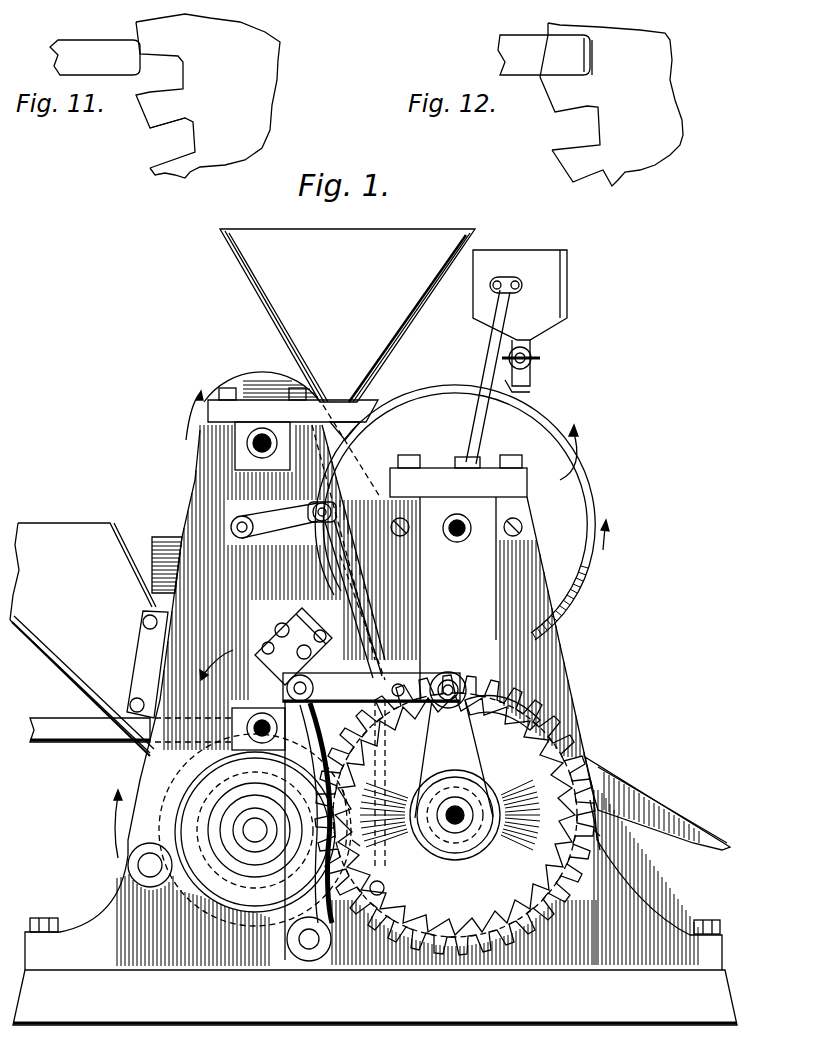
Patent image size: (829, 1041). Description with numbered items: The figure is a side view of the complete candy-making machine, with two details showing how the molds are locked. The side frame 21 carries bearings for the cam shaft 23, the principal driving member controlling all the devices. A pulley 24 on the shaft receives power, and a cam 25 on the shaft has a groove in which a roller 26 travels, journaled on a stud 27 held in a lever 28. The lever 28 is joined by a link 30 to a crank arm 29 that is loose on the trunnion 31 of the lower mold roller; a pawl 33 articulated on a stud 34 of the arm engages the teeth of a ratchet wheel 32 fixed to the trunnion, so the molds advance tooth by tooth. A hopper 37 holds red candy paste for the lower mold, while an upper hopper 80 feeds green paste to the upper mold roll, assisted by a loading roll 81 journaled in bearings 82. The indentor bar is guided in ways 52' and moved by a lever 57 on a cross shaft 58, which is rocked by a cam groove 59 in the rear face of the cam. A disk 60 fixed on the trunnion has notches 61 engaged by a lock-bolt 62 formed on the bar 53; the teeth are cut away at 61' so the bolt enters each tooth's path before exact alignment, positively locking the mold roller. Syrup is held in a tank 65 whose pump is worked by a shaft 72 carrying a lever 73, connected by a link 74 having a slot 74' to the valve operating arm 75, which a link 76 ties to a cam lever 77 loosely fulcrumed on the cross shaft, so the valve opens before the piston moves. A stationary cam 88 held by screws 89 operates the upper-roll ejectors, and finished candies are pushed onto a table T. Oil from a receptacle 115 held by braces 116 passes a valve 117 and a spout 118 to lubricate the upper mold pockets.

In FIG. 1, the side frame 21 is at (612, 913).
In FIG. 1, the cam shaft 23 is at (243, 830).
In FIG. 1, the pulley 24 is at (133, 783).
In FIG. 1, the cam 25 is at (263, 908).
In FIG. 1, the roller 26 is at (345, 786).
In FIG. 1, the stud 27 is at (345, 834).
In FIG. 1, the lever 28 is at (385, 888).
In FIG. 1, the crank arm 29 is at (543, 717).
In FIG. 1, the link 30 is at (420, 690).
In FIG. 1, the trunnion 31 is at (577, 741).
In FIG. 1, the ratchet wheel 32 is at (583, 756).
In FIG. 1, the pawl 33 is at (493, 697).
In FIG. 1, the stud 34 is at (449, 680).
In FIG. 1, the hopper 37 is at (65, 537).
In FIG. 1, the ways 52' is at (270, 664).
In FIG. 1, the bar 53 is at (258, 650).
In FIG. 1, the lever 57 is at (180, 823).
In FIG. 1, the cross shaft 58 is at (138, 866).
In FIG. 1, the cam groove 59 is at (227, 910).
In FIG. 11, the disk 60 is at (266, 106).
In FIG. 12, the disk 60 is at (666, 90).
In FIG. 1, the disk 60 is at (612, 774).
In FIG. 11, the notches 61 is at (170, 95).
In FIG. 12, the notches 61 is at (601, 95).
In FIG. 1, the notches 61 is at (620, 842).
In FIG. 11, the cut-away portion 61' is at (142, 124).
In FIG. 11, the lock-bolt 62 is at (62, 50).
In FIG. 12, the lock-bolt 62 is at (505, 46).
In FIG. 1, the lock-bolt 62 is at (378, 701).
In FIG. 1, the tank 65 is at (163, 543).
In FIG. 1, the shaft 72 is at (234, 532).
In FIG. 1, the lever 73 is at (290, 512).
In FIG. 1, the link 74 is at (435, 577).
In FIG. 1, the slot 74' is at (354, 592).
In FIG. 1, the operating arm 75 is at (398, 642).
In FIG. 1, the link 76 is at (387, 755).
In FIG. 1, the cam lever 77 is at (182, 888).
In FIG. 1, the hopper 80 is at (258, 294).
In FIG. 1, the loading roll 81 is at (256, 385).
In FIG. 1, the bearings 82 is at (242, 430).
In FIG. 1, the cam 88 is at (562, 481).
In FIG. 1, the screws 89 is at (404, 517).
In FIG. 1, the receptacle 115 is at (567, 300).
In FIG. 1, the braces 116 is at (493, 343).
In FIG. 1, the valve 117 is at (536, 358).
In FIG. 1, the spout 118 is at (531, 380).
In FIG. 1, the table T is at (657, 803).